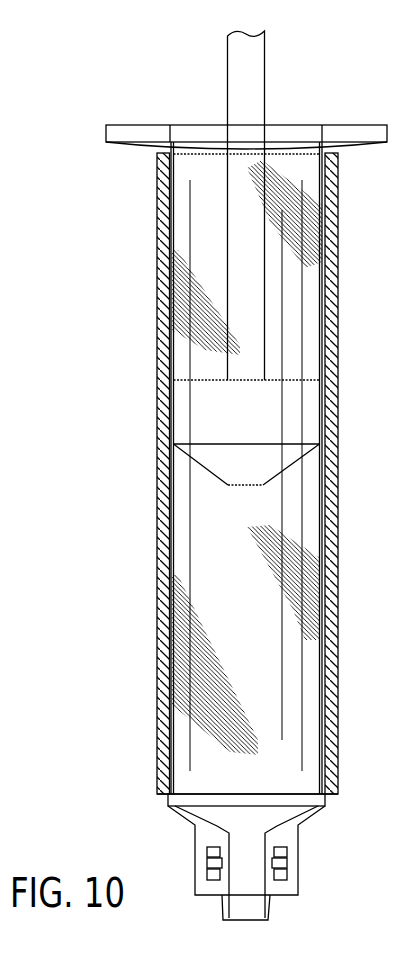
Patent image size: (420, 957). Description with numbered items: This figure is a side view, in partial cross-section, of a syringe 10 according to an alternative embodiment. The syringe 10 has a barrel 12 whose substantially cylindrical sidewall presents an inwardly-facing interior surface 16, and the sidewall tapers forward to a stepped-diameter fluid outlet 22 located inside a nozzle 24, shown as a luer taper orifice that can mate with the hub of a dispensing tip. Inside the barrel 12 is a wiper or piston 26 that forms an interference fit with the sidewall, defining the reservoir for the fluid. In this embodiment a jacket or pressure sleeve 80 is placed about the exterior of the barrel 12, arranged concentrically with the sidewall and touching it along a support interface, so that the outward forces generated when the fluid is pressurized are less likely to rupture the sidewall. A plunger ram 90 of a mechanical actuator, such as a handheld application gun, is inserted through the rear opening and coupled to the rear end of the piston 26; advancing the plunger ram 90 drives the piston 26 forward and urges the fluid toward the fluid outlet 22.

The syringe 10 is at (99, 135).
The barrel 12 is at (236, 592).
The interior surface 16 is at (326, 665).
The fluid outlet 22 is at (263, 858).
The nozzle 24 is at (218, 910).
The piston 26 is at (287, 467).
The pressure sleeve 80 is at (338, 465).
The plunger ram 90 is at (227, 77).